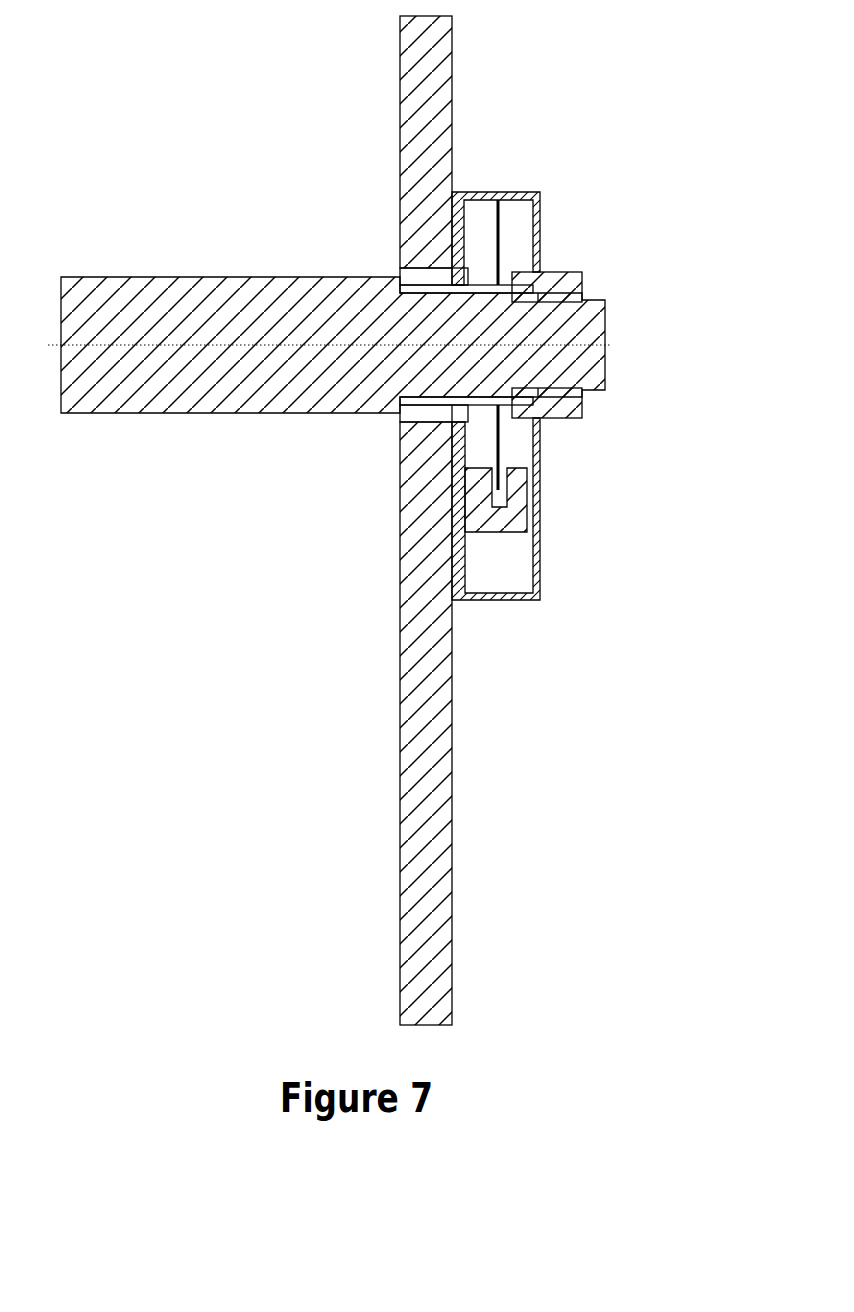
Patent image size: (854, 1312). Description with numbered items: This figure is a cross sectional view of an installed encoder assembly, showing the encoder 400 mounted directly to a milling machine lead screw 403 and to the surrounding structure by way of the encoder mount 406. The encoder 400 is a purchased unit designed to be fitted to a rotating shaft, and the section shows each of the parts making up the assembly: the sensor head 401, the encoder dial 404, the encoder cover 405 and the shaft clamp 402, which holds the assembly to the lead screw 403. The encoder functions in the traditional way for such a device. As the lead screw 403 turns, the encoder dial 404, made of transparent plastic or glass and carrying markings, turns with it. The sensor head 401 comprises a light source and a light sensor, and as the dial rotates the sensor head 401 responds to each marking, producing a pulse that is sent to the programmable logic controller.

The encoder 400 is at (578, 629).
The sensor head 401 is at (528, 541).
The shaft clamp 402 is at (590, 433).
The milling machine lead screw 403 is at (613, 288).
The encoder dial 404 is at (514, 232).
The encoder cover 405 is at (528, 177).
The encoder mount 406 is at (466, 70).